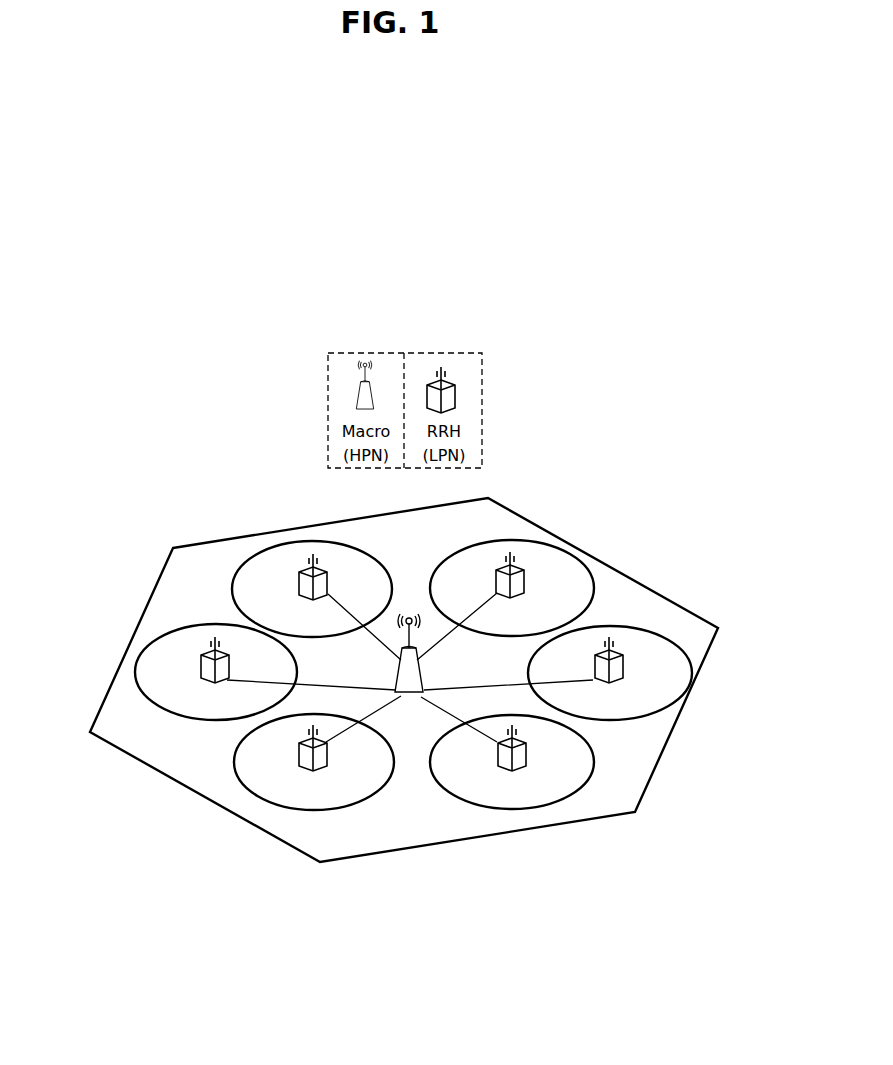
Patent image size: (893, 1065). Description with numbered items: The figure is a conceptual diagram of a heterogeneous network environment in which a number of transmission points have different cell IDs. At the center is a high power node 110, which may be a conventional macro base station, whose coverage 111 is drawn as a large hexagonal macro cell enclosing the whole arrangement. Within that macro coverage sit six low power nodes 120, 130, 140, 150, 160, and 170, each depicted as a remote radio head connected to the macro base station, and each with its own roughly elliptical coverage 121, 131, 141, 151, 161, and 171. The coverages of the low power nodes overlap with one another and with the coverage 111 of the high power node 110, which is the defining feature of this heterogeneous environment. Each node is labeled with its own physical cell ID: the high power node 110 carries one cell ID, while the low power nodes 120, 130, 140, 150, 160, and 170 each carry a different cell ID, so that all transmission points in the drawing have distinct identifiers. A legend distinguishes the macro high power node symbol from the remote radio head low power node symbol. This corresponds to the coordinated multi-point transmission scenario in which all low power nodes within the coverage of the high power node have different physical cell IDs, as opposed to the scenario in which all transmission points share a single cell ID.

The high power node 110 is at (409, 618).
The coverage of the high power node 111 is at (417, 850).
The low power node 120 is at (524, 570).
The coverage of the low power node 121 is at (580, 558).
The low power node 130 is at (628, 663).
The coverage of the low power node 131 is at (678, 652).
The low power node 140 is at (523, 749).
The coverage of the low power node 141 is at (562, 798).
The low power node 150 is at (300, 768).
The coverage of the low power node 151 is at (310, 810).
The low power node 160 is at (201, 670).
The coverage of the low power node 161 is at (135, 677).
The low power node 170 is at (306, 567).
The coverage of the low power node 171 is at (243, 562).